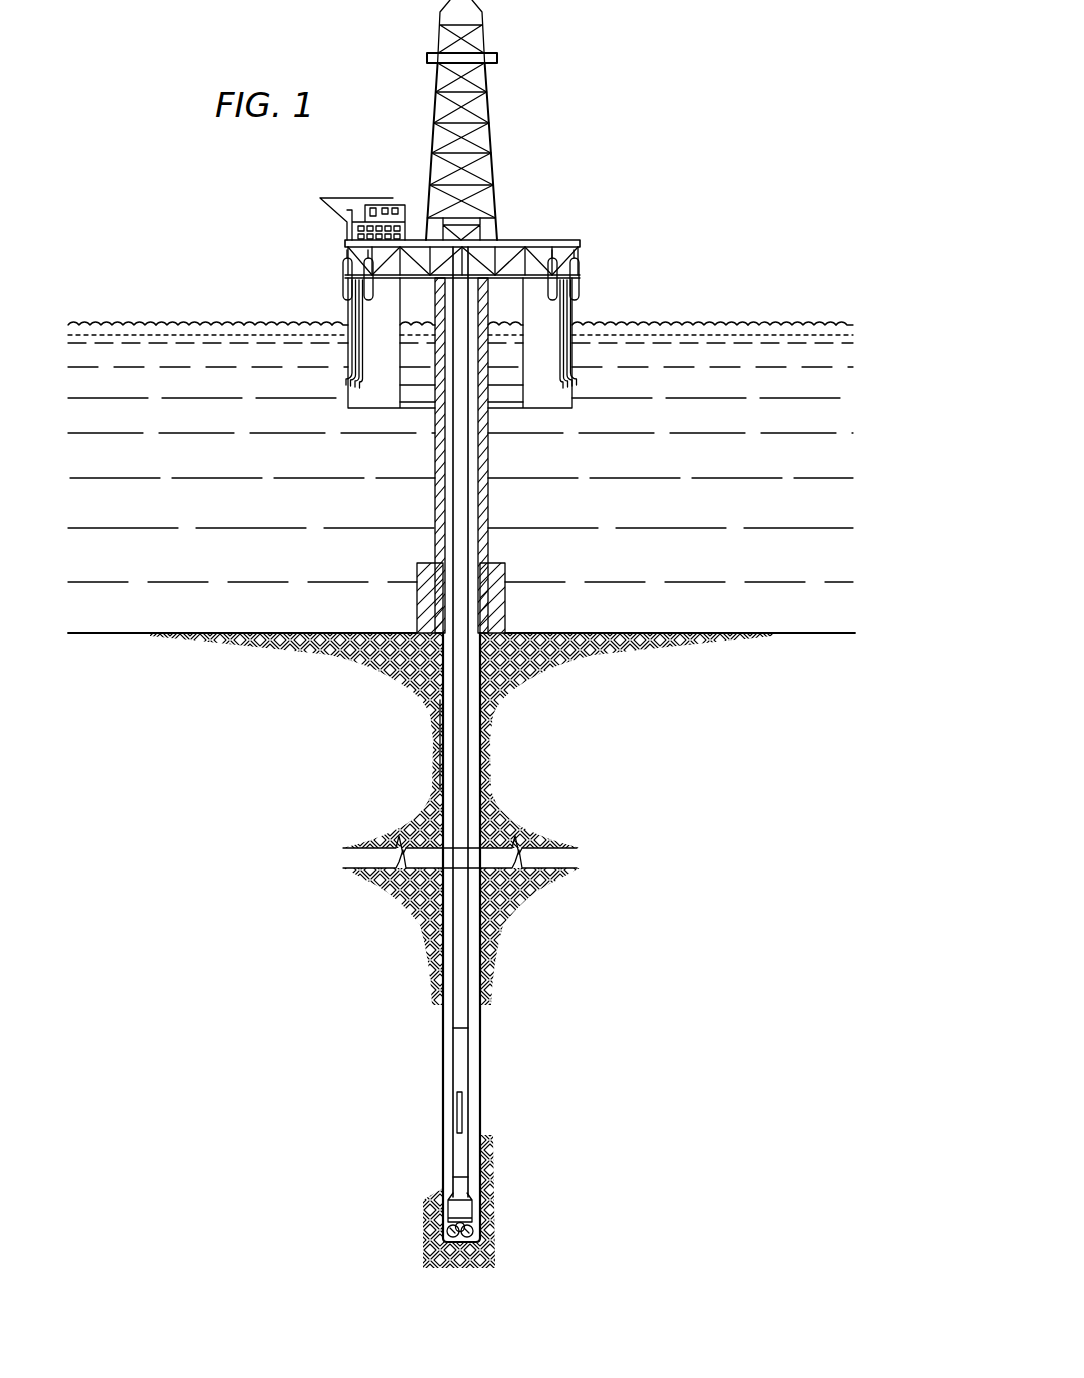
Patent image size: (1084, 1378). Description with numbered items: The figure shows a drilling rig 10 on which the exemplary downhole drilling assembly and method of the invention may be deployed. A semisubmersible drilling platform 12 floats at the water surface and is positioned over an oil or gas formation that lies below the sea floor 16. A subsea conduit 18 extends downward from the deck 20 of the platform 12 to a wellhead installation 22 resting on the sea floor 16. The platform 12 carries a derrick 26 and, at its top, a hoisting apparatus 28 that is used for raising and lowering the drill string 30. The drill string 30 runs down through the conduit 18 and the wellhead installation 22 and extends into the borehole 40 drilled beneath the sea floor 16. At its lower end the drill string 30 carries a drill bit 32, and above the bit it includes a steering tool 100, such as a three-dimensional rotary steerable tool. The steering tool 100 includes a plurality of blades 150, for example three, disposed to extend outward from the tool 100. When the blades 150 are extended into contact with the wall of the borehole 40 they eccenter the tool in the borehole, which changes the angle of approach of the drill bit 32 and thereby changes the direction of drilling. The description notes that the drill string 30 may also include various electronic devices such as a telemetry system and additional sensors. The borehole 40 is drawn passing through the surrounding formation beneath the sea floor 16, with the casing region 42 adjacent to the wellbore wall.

The drilling rig 10 is at (560, 129).
The semisubmersible drilling platform 12 is at (565, 242).
The sea floor 16 is at (728, 633).
The subsea conduit 18 is at (489, 501).
The deck 20 is at (535, 283).
The wellhead installation 22 is at (500, 562).
The derrick 26 is at (470, 223).
The hoisting apparatus 28 is at (486, 42).
The drill string 30 is at (466, 433).
The drill bit 32 is at (478, 1230).
The borehole 40 is at (472, 753).
The casing 42 is at (439, 750).
The steering tool 100 is at (453, 1070).
The blades 150 is at (458, 1113).